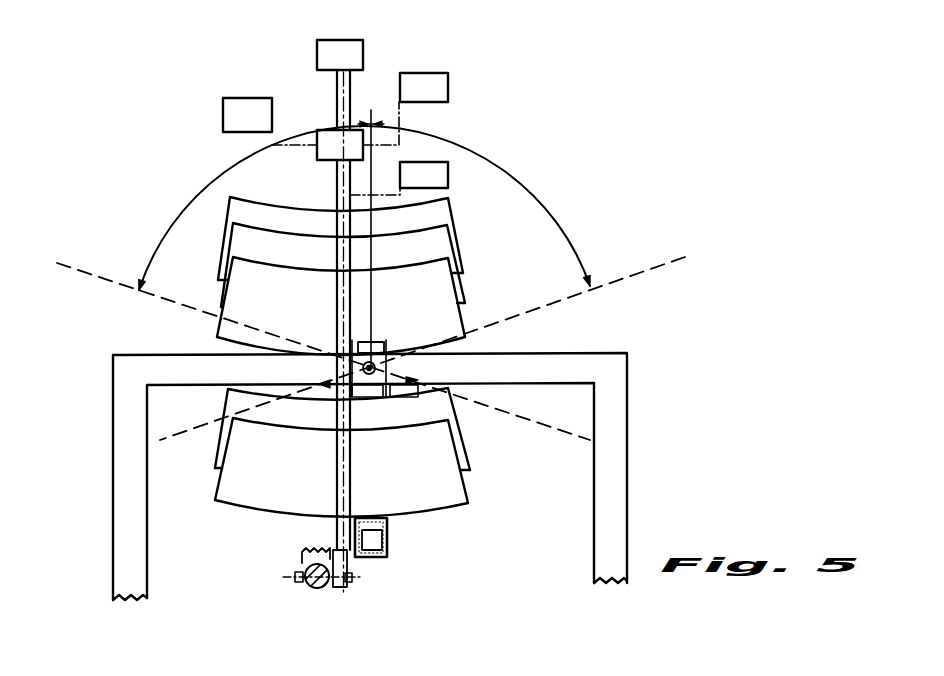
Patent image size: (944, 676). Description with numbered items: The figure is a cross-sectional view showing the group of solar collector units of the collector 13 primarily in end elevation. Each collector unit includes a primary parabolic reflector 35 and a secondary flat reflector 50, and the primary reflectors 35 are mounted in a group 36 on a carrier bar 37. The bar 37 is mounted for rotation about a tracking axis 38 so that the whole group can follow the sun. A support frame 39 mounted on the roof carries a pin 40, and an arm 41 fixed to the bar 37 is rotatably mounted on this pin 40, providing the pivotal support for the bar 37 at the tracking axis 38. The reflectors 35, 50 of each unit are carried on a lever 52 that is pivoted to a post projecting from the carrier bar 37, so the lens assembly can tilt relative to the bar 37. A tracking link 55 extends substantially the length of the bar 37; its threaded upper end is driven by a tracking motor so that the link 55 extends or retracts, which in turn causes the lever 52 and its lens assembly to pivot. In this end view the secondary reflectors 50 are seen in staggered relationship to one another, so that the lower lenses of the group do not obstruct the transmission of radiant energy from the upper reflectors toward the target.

The collector 13 is at (545, 260).
The primary reflector 35 is at (427, 245).
The group 36 is at (510, 335).
The bar 37 is at (388, 540).
The tracking axis 38 is at (378, 374).
The support frame 39 is at (610, 377).
The pin 40 is at (374, 349).
The arm 41 is at (358, 342).
The secondary flat reflector 50 is at (352, 50).
The lever 52 is at (380, 290).
The tracking link 55 is at (314, 590).